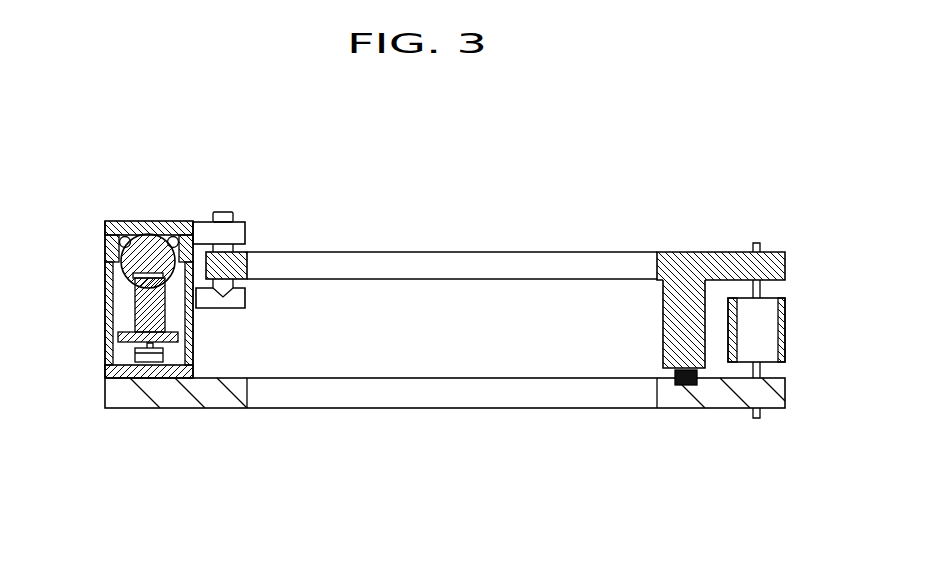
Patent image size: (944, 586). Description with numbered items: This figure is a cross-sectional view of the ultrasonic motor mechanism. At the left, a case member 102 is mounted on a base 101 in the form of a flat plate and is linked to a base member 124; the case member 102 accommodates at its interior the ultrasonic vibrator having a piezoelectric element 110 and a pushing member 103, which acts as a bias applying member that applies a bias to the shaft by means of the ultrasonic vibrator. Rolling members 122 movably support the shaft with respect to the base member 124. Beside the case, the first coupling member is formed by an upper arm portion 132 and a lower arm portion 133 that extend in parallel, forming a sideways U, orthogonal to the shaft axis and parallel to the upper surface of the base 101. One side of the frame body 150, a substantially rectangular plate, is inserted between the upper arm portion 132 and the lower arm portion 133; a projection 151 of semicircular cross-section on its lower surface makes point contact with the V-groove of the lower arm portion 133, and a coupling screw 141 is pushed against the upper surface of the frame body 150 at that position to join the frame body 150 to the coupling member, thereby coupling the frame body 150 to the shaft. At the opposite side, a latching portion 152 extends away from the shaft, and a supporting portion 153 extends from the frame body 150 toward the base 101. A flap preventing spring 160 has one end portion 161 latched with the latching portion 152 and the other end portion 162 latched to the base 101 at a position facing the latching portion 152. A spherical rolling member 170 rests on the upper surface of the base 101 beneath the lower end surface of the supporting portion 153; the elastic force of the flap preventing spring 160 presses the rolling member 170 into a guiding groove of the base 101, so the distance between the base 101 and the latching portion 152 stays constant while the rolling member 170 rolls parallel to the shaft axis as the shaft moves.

The base 101 is at (177, 397).
The case member 102 is at (102, 370).
The pushing member 103 is at (137, 357).
The piezoelectric element 110 is at (138, 293).
The rolling members 122 is at (121, 237).
The base member 124 is at (143, 221).
The upper arm portion 132 is at (240, 233).
The lower arm portion 133 is at (245, 297).
The coupling screw 141 is at (218, 212).
The frame body 150 is at (545, 262).
The projection 151 is at (223, 297).
The latching portion 152 is at (777, 258).
The supporting portion 153 is at (667, 327).
The flap preventing spring 160 is at (767, 332).
The one end portion 161 is at (758, 243).
The other end portion 162 is at (757, 420).
The rolling member 170 is at (680, 385).